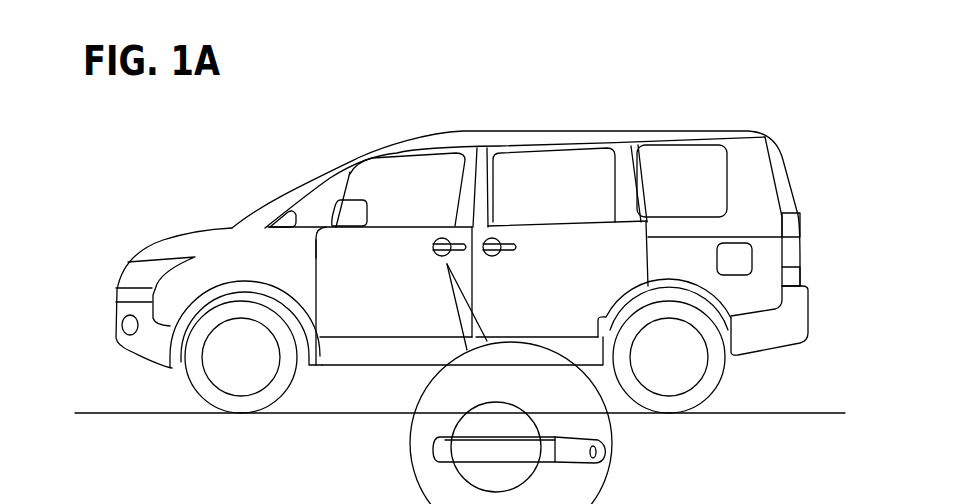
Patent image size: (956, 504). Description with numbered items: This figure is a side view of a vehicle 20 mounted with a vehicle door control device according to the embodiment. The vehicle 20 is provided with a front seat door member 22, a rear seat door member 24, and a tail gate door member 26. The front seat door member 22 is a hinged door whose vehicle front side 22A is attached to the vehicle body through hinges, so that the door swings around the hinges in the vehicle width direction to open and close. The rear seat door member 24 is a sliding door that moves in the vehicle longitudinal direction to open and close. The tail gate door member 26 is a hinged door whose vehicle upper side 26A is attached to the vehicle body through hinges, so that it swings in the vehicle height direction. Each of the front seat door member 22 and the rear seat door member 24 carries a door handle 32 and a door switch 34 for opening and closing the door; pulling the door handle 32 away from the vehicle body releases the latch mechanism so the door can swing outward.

The vehicle 20 is at (286, 122).
The front seat door member 22 is at (388, 178).
The vehicle front side 22A is at (313, 258).
The rear seat door member 24 is at (560, 167).
The tail gate door member 26 is at (793, 180).
The vehicle upper side 26A is at (768, 134).
The door handle 32 is at (428, 243).
The door switch 34 is at (593, 440).